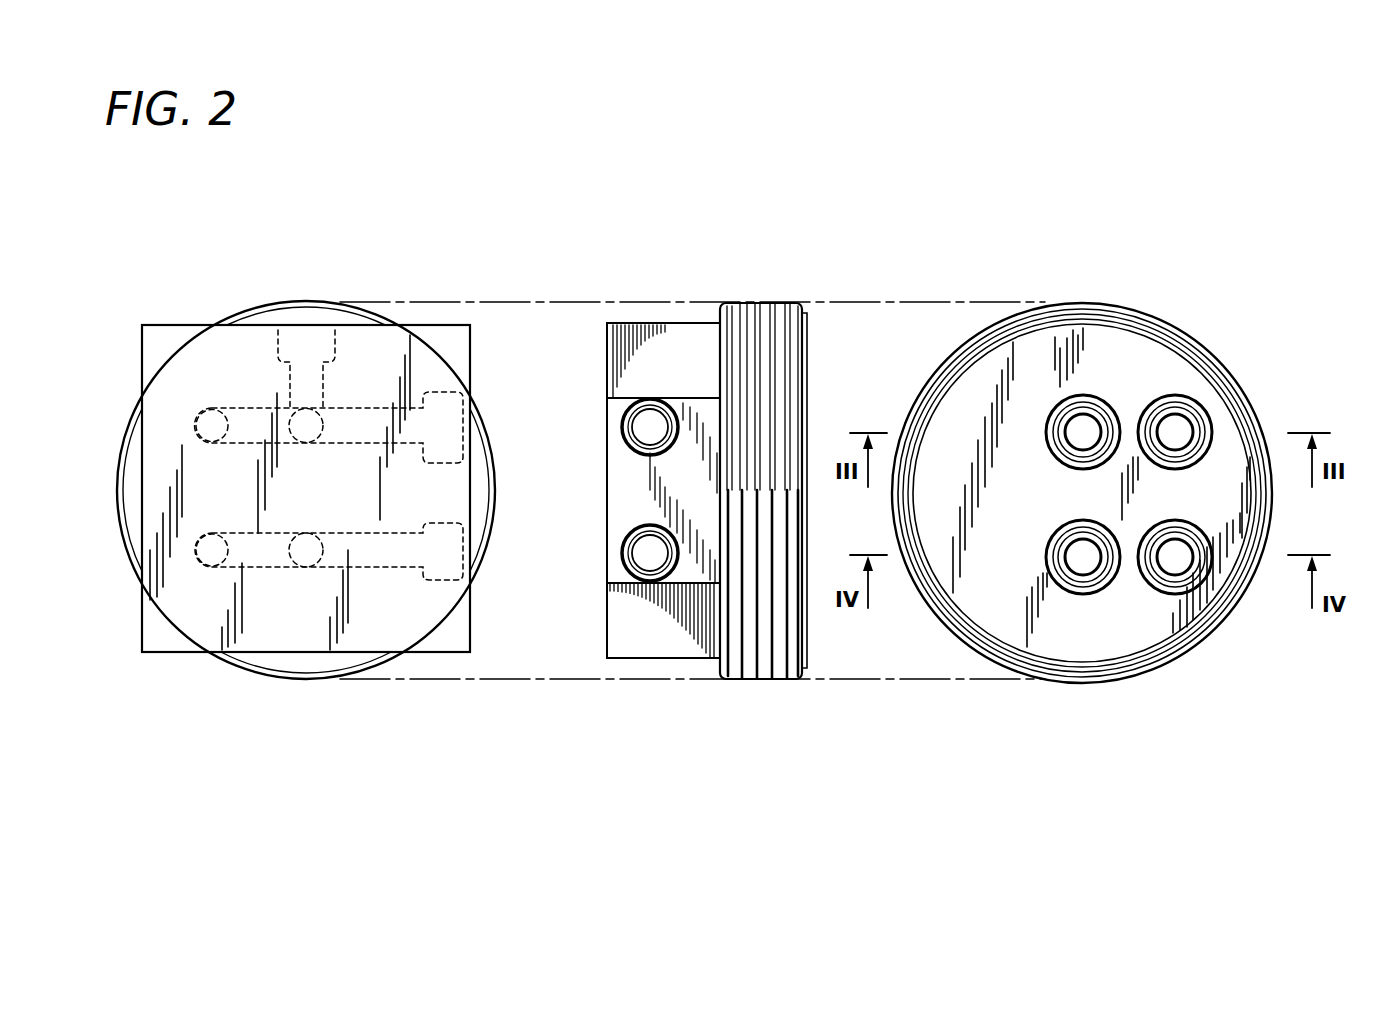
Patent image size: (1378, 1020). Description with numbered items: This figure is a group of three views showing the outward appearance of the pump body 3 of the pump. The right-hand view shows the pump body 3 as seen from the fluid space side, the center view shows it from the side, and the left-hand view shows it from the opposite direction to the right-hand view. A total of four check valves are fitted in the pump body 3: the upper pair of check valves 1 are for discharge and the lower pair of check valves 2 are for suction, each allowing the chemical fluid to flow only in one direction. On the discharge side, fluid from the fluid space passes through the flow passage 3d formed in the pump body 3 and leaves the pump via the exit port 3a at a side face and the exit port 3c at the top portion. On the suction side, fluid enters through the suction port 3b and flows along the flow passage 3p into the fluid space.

The check valve 1 is at (1183, 395).
The check valve 2 is at (1175, 594).
The pump body 3 is at (170, 620).
The exit port 3a is at (470, 432).
The suction port 3b is at (472, 551).
The exit port 3c is at (307, 325).
The flow passage 3d is at (265, 440).
The flow passage 3p is at (262, 533).